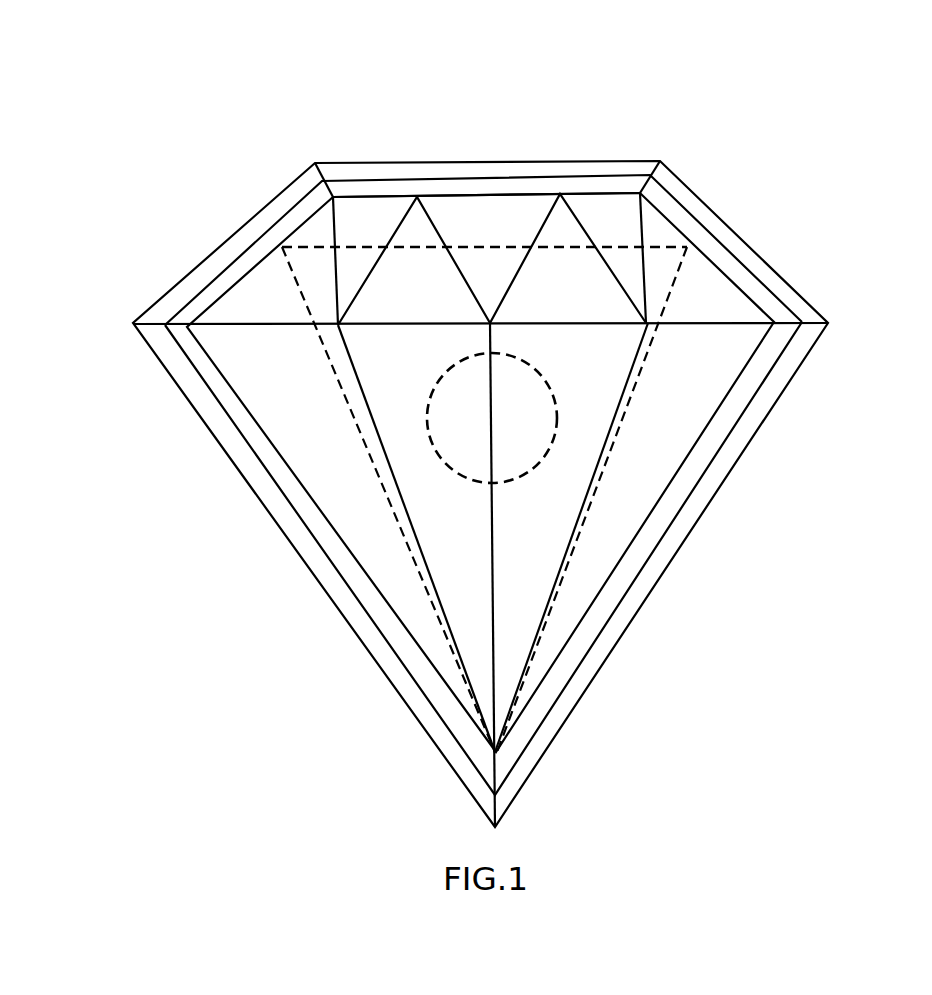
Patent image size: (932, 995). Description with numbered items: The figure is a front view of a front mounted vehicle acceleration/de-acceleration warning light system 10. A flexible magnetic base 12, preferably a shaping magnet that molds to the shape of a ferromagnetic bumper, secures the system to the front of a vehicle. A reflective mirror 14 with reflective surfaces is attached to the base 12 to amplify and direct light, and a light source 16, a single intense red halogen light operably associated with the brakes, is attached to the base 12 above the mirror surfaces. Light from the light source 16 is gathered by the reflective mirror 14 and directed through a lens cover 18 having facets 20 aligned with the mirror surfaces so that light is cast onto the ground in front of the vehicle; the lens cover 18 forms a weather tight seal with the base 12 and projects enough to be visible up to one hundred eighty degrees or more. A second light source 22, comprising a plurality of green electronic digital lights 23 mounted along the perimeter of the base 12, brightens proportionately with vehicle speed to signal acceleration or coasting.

The front mounted vehicle acceleration/de-acceleration warning light system 10 is at (700, 605).
The flexible magnetic base 12 is at (720, 237).
The reflective mirror 14 is at (653, 295).
The light source 16 is at (527, 430).
The lens cover 18 is at (253, 287).
The facets 20 is at (363, 213).
The second light source 22 is at (515, 187).
The green electronic digital lights 23 is at (285, 475).